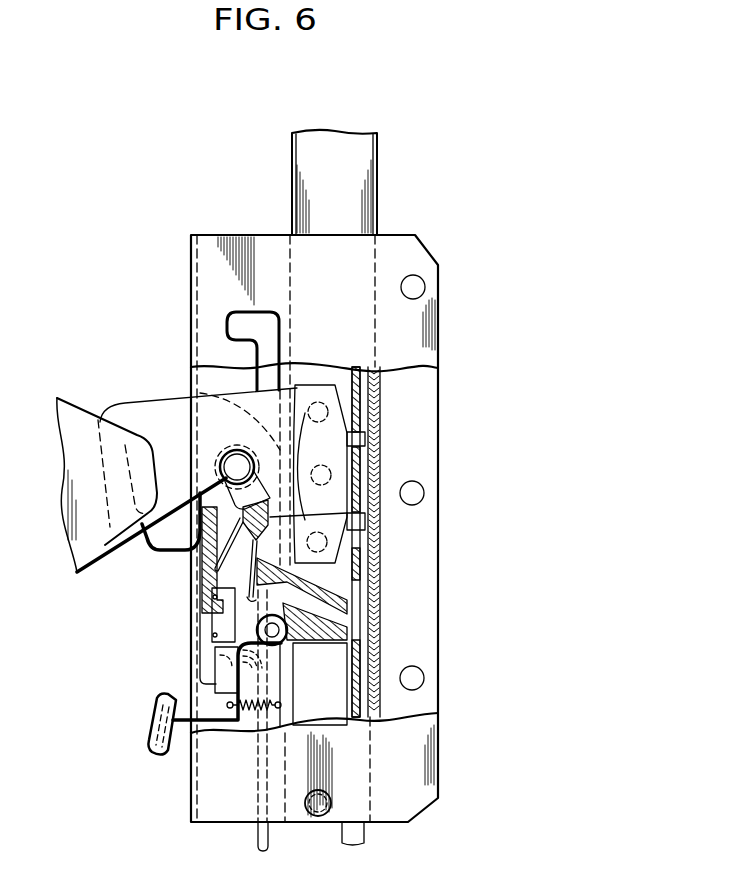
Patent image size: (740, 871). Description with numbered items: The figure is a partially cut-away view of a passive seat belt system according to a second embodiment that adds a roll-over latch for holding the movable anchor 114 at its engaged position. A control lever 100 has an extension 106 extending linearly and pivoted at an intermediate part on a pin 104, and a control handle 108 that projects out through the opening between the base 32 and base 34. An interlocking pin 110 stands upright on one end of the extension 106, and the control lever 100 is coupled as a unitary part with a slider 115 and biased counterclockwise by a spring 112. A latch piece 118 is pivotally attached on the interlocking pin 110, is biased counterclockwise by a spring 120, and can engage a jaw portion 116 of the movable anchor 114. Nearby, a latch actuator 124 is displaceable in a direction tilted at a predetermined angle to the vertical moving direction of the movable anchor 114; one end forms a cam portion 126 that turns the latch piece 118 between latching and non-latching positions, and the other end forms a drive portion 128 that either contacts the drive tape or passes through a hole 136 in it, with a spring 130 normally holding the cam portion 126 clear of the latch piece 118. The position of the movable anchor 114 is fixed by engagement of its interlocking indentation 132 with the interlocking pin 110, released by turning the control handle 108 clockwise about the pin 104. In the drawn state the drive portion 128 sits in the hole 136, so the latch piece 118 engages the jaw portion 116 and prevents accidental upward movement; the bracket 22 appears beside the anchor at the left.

The mounting bracket 22 is at (82, 485).
The base 32 is at (213, 250).
The base 34 is at (334, 182).
The control lever 100 is at (213, 663).
The pin 104 is at (287, 643).
The extension 106 is at (217, 692).
The control handle 108 is at (147, 727).
The interlocking pin 110 is at (220, 455).
The spring 112 is at (248, 725).
The movable anchor 114 is at (130, 396).
The slider 115 is at (200, 673).
The jaw portion 116 is at (198, 572).
The latch piece 118 is at (352, 518).
The spring 120 is at (200, 541).
The latch actuator 124 is at (343, 580).
The cam portion 126 is at (190, 595).
The drive portion 128 is at (360, 628).
The spring 130 is at (192, 628).
The interlocking indentation 132 is at (197, 382).
The hole 136 is at (357, 597).